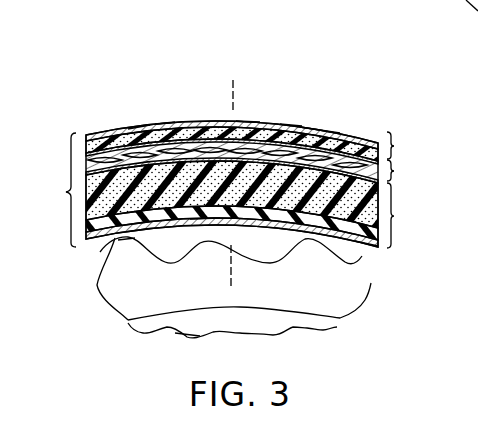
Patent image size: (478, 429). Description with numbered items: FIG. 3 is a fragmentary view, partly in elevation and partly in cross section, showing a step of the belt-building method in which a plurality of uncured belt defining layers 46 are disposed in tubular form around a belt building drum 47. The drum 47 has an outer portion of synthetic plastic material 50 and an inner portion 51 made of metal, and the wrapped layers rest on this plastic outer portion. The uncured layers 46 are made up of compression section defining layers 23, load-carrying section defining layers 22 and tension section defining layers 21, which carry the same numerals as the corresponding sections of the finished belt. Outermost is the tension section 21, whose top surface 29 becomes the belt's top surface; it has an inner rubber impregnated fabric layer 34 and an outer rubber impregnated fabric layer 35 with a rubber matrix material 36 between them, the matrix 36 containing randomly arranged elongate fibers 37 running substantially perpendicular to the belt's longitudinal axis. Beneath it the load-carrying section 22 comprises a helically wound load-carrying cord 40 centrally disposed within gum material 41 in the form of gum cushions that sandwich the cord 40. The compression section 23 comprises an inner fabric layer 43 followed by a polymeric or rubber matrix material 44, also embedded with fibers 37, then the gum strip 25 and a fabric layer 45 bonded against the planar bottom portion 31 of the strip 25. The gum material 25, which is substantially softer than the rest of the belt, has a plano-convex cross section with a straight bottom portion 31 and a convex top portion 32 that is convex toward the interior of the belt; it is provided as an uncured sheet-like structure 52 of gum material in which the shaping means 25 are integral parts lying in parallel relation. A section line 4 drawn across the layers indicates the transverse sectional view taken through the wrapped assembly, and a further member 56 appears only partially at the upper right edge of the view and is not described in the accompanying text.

The section line 4- 4 is at (198, 80).
The tension section 21 is at (397, 147).
The load-carrying section 22 is at (397, 172).
The compression section 23 is at (397, 218).
The gum material 25 is at (103, 250).
The top surface 29 is at (320, 133).
The planar bottom portion 31 is at (126, 240).
The convex top portion 32 is at (352, 243).
The inner rubber impregnated fabric layer 34 is at (128, 134).
The outer rubber impregnated fabric layer 35 is at (133, 130).
The rubber matrix material 36 is at (163, 127).
The elongate fibers 37 is at (209, 125).
The load-carrying cord 40 is at (340, 160).
The gum material 41 is at (290, 128).
The inner fabric layer 43 is at (246, 124).
The matrix material 44 is at (204, 234).
The fabric layer 45 is at (99, 283).
The uncured belt defining layers 46 is at (65, 191).
The belt building drum 47 is at (187, 337).
The synthetic plastic material 50 is at (366, 300).
The inner portion 51 is at (328, 332).
The sheet-like structure 52 is at (380, 234).
The cutting device 56 is at (466, 29).